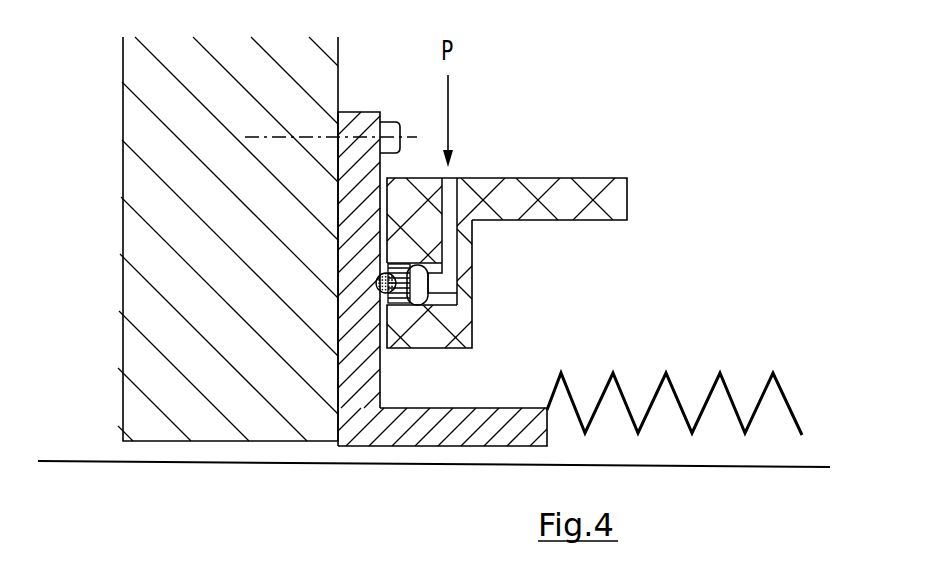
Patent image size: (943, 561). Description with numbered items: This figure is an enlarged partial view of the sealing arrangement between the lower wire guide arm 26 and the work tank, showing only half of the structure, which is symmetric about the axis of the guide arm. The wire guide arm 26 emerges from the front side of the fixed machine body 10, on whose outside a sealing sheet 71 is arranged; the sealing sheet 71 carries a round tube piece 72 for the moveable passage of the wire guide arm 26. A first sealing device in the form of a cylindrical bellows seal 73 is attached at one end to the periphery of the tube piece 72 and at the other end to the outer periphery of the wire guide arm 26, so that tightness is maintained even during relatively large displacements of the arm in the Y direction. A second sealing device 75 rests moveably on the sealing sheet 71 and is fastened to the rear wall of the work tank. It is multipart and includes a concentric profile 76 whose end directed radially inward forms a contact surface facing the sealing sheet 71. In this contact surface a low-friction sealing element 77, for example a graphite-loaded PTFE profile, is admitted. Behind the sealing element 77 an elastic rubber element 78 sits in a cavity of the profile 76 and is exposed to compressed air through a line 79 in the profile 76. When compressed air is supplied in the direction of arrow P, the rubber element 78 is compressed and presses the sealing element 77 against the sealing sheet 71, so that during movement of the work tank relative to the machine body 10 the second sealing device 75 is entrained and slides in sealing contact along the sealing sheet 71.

The machine body 10 is at (229, 52).
The sealing sheet 71 is at (355, 130).
The tube piece 72 is at (480, 427).
The bellows seal 73 is at (650, 398).
The second sealing device 75 is at (569, 170).
The concentric profile 76 is at (505, 190).
The sealing element 77 is at (405, 306).
The elastic rubber element 78 is at (414, 290).
The line 79 is at (446, 246).
The lower wire guide arm 26 is at (398, 504).